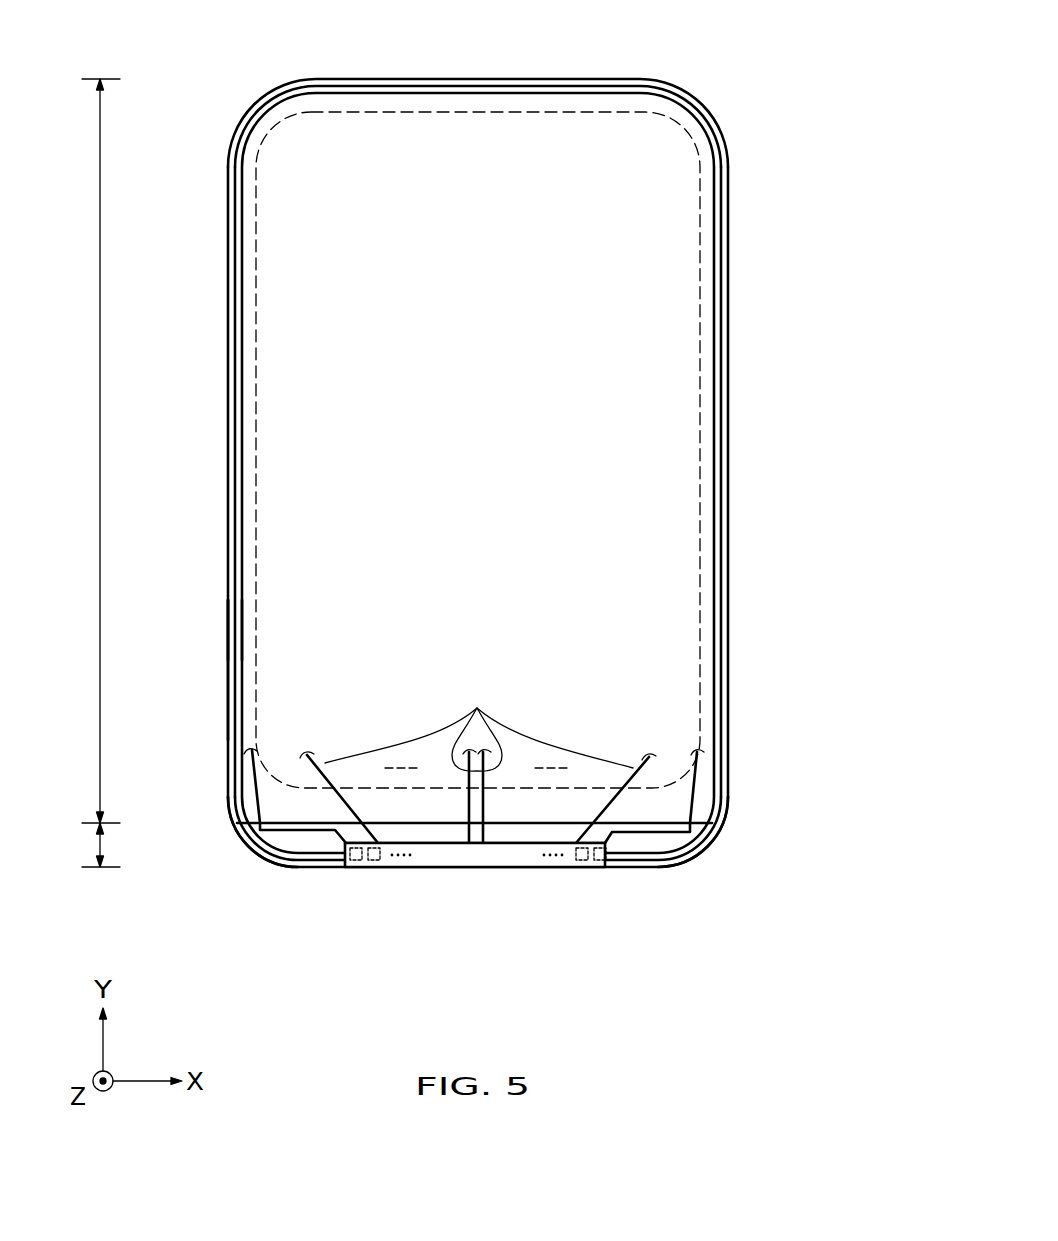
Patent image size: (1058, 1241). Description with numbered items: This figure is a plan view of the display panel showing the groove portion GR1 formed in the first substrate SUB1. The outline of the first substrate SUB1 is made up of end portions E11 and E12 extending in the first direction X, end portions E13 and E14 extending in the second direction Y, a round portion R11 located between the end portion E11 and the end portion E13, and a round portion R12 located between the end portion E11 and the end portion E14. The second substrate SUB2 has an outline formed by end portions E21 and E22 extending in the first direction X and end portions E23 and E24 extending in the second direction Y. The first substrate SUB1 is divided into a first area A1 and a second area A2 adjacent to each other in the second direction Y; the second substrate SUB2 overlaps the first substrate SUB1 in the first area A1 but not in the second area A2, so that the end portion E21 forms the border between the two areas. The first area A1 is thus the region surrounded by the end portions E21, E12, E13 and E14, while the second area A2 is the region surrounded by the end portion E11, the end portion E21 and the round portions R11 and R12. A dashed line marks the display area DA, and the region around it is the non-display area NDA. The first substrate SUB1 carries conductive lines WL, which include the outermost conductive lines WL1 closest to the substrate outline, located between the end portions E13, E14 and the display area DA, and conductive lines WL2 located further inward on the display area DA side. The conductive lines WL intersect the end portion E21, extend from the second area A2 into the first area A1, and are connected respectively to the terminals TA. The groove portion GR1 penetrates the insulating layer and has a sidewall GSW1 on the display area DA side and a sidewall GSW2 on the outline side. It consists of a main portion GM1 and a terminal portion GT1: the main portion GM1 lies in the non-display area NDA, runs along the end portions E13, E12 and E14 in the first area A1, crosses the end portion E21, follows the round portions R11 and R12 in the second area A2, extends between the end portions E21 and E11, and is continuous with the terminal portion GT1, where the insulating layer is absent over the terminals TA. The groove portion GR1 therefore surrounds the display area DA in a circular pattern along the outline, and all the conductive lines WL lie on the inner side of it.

The first substrate SUB1 is at (504, 473).
The second substrate SUB2 is at (532, 867).
The end portion E11 is at (612, 869).
The end portion E12 is at (478, 86).
The end portion E13 is at (181, 482).
The end portion E14 is at (801, 482).
The end portion E21 is at (514, 845).
The end portion E22 is at (480, 79).
The end portion E23 is at (226, 389).
The end portion E24 is at (730, 441).
The display area DA is at (677, 232).
The non-display area NDA is at (708, 282).
The groove portion GR1 is at (228, 673).
The sidewall GSW1 is at (248, 629).
The sidewall GSW2 is at (226, 629).
The main portion GM1 is at (250, 751).
The conductive lines WL is at (478, 738).
The conductive lines WL1 is at (257, 786).
The conductive lines WL2 is at (477, 760).
The terminal portion GT1 is at (475, 892).
The terminals TA is at (378, 867).
The round portion R11 is at (245, 838).
The round portion R12 is at (680, 868).
The first area A1 is at (92, 451).
The second area A2 is at (92, 845).